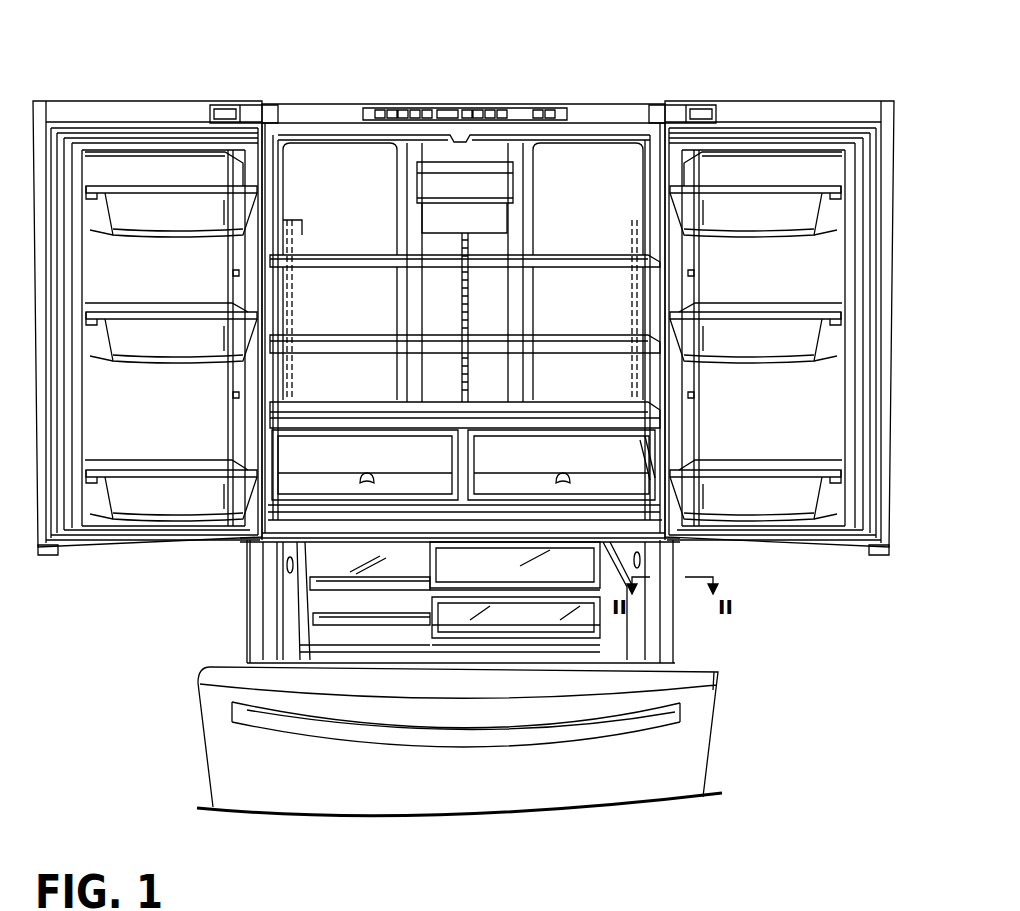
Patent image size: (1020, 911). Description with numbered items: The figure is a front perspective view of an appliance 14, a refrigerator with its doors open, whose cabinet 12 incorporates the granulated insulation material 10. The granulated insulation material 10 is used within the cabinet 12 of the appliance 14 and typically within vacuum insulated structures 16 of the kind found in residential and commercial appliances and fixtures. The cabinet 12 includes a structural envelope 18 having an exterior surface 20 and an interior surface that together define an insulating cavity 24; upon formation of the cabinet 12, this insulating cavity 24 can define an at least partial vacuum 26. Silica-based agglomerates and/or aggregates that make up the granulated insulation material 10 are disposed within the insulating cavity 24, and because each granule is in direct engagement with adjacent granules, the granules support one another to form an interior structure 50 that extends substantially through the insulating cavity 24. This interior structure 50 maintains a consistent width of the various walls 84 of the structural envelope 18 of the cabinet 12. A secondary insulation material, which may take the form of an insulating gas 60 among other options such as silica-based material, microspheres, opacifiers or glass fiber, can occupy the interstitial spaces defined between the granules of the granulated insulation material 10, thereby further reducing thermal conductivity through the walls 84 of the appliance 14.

The appliance 14 is at (621, 60).
The cabinet 12 is at (357, 101).
The exterior surface 20 is at (605, 115).
The at least partial vacuum 26 is at (478, 101).
The insulating cavity 24 is at (276, 181).
The walls 84 is at (700, 290).
The vacuum insulated structures 16 is at (250, 592).
The structural envelope 18 is at (672, 626).
The insulating gas 60 is at (248, 620).
The interior structure 50 is at (531, 902).
The granulated insulation material 10 is at (617, 902).